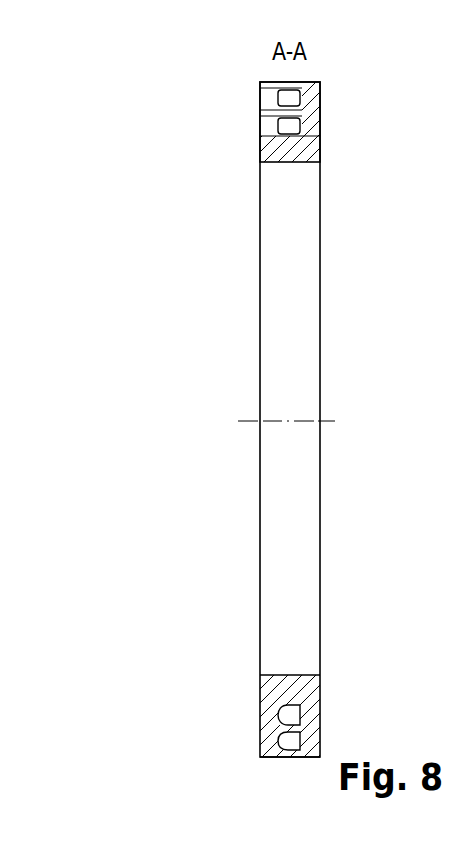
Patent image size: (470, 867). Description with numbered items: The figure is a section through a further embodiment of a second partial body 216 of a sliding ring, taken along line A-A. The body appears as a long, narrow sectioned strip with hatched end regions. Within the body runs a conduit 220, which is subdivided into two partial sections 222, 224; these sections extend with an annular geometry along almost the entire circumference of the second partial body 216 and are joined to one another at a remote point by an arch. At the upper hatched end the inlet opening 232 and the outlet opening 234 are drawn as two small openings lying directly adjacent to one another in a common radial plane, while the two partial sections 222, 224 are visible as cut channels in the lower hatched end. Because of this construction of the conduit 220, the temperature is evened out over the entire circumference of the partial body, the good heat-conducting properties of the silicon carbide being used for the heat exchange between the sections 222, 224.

The second partial body 216 is at (345, 98).
The conduit 220 is at (320, 101).
The partial section 222 is at (286, 711).
The partial section 224 is at (286, 740).
The inlet opening 232 is at (284, 99).
The outlet opening 234 is at (284, 126).